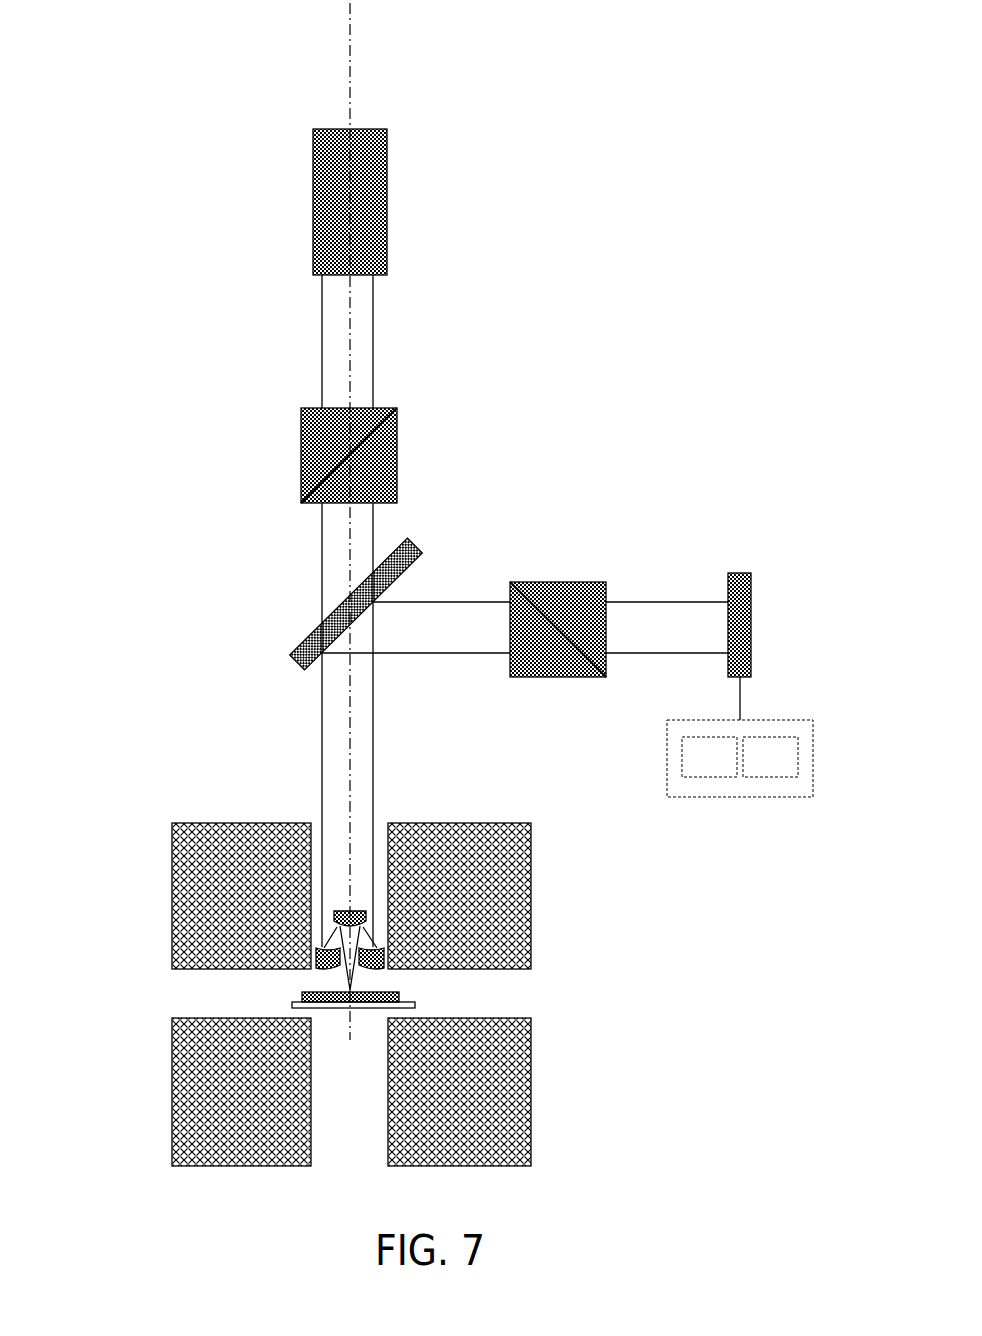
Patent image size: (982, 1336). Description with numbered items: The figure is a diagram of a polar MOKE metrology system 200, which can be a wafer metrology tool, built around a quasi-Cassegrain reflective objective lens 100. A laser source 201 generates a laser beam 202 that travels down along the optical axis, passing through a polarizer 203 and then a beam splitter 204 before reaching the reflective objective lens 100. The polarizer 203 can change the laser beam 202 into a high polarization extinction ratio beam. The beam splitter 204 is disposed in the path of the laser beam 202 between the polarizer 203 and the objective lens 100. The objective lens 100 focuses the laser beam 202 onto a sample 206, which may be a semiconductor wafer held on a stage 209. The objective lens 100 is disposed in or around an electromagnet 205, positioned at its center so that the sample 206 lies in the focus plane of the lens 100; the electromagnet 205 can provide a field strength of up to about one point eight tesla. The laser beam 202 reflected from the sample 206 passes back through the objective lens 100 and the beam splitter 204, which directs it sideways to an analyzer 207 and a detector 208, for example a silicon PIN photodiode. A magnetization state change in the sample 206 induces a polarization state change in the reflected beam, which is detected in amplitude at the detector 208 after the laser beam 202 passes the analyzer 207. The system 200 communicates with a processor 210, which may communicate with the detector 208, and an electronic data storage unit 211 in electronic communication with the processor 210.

The system 200 is at (160, 123).
The laser source 201 is at (387, 167).
The laser beam 202 is at (374, 333).
The polarizer 203 is at (300, 452).
The beam splitter 204 is at (296, 641).
The electromagnet 205 is at (531, 873).
The sample 206 is at (300, 995).
The analyzer 207 is at (580, 582).
The detector 208 is at (740, 573).
The stage 209 is at (292, 1005).
The processor 210 is at (709, 757).
The electronic data storage unit 211 is at (770, 757).
The quasi-Cassegrain reflective objective lens 100 is at (385, 970).